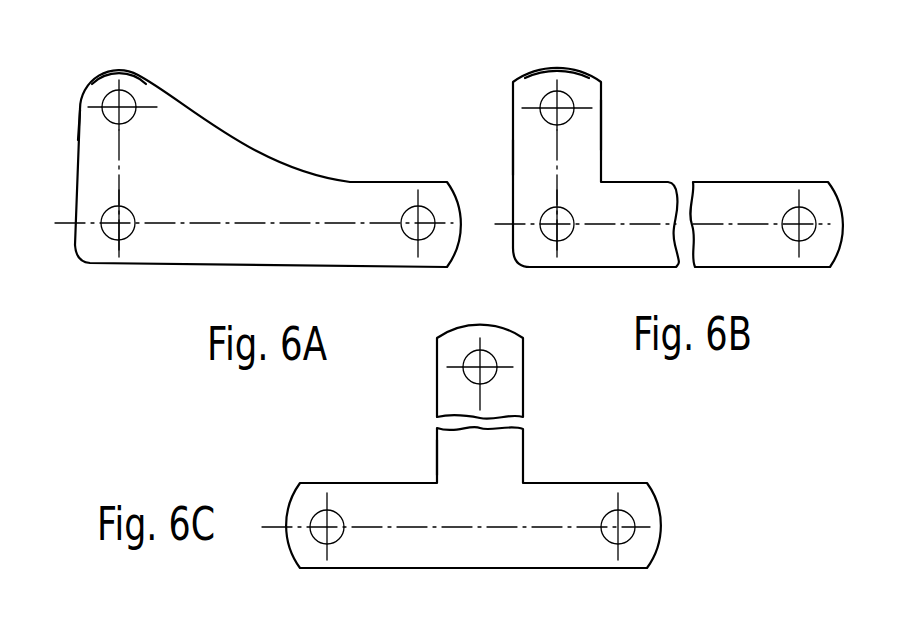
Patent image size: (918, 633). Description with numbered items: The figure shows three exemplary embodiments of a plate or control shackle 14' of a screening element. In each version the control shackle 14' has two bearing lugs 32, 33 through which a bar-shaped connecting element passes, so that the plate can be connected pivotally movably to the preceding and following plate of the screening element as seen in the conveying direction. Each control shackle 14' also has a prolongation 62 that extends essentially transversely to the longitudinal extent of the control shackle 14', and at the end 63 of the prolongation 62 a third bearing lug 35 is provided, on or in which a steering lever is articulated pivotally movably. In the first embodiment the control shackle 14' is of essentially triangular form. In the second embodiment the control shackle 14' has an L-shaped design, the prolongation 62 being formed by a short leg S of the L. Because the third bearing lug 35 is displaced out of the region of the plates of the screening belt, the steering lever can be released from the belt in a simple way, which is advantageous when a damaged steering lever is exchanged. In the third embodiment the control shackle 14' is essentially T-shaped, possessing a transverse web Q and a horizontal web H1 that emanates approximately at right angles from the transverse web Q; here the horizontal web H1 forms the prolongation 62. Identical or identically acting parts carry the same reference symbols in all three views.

In FIG. 6A, the control shackle 14' is at (258, 168).
In FIG. 6B, the control shackle 14' is at (669, 167).
In FIG. 6C, the control shackle 14' is at (461, 492).
In FIG. 6A, the prolongation 62 is at (92, 130).
In FIG. 6B, the prolongation 62 is at (593, 127).
In FIG. 6C, the prolongation 62 is at (443, 393).
In FIG. 6A, the end of the prolongation 63 is at (107, 70).
In FIG. 6B, the end of the prolongation 63 is at (542, 68).
In FIG. 6A, the third bearing lug 35 is at (127, 100).
In FIG. 6B, the third bearing lug 35 is at (567, 95).
In FIG. 6C, the third bearing lug 35 is at (496, 376).
In FIG. 6A, the bearing lug 32 is at (108, 240).
In FIG. 6B, the bearing lug 32 is at (552, 243).
In FIG. 6C, the bearing lug 32 is at (313, 510).
In FIG. 6A, the bearing lug 33 is at (407, 242).
In FIG. 6B, the bearing lug 33 is at (787, 243).
In FIG. 6C, the bearing lug 33 is at (637, 518).
In FIG. 6B, the short leg S is at (527, 158).
In FIG. 6C, the horizontal web H1 is at (452, 450).
In FIG. 6C, the transverse web Q is at (467, 557).